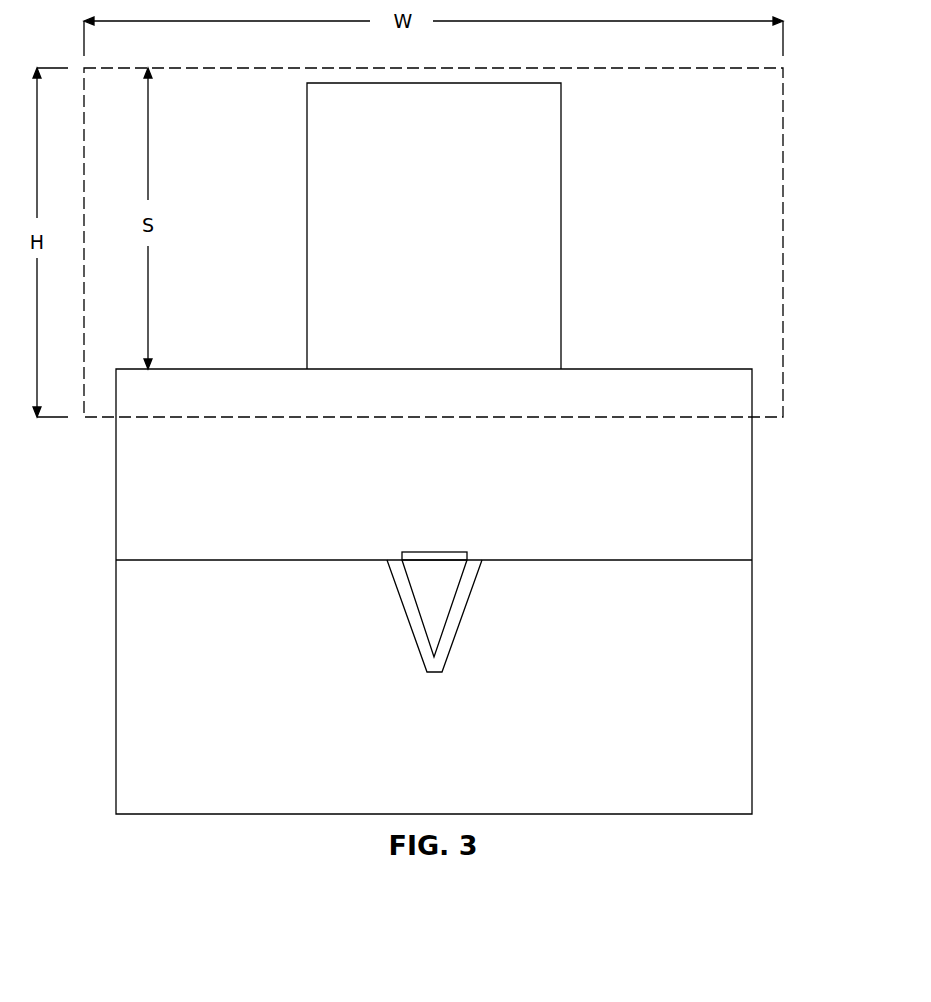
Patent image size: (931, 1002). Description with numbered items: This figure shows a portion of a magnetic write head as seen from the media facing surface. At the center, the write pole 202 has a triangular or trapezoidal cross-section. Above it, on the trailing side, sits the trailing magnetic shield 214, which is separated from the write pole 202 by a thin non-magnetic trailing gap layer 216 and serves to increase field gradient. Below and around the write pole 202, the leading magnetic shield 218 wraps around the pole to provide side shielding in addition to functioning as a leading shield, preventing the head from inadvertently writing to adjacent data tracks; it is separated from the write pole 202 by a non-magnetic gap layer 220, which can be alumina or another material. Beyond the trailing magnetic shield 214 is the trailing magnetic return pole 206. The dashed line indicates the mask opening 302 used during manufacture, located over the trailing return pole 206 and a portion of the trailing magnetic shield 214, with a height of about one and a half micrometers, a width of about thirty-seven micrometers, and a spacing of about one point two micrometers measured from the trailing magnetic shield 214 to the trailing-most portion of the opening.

The write pole 202 is at (427, 592).
The trailing magnetic return pole 206 is at (462, 206).
The trailing magnetic shield 214 is at (482, 483).
The non-magnetic trailing gap layer 216 is at (448, 557).
The leading magnetic shield 218 is at (478, 729).
The non-magnetic gap layer 220 is at (458, 616).
The mask opening 302 is at (784, 244).